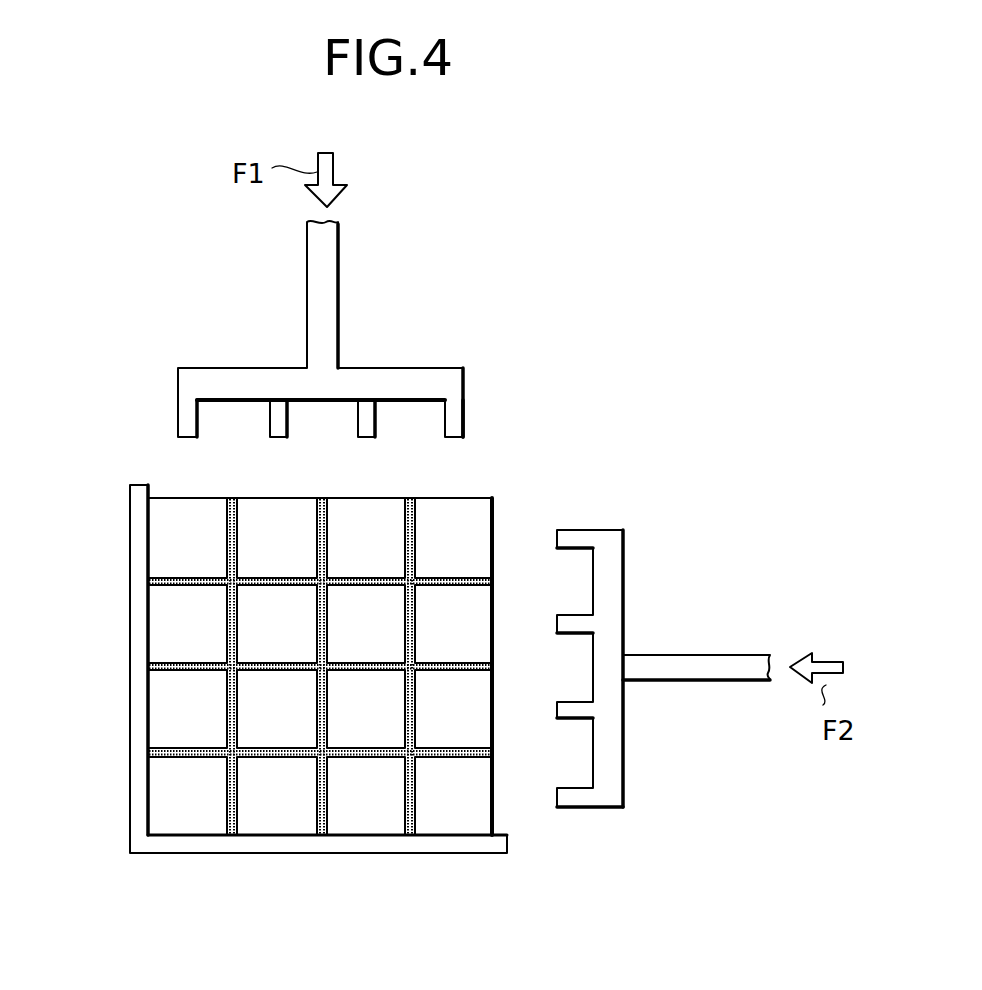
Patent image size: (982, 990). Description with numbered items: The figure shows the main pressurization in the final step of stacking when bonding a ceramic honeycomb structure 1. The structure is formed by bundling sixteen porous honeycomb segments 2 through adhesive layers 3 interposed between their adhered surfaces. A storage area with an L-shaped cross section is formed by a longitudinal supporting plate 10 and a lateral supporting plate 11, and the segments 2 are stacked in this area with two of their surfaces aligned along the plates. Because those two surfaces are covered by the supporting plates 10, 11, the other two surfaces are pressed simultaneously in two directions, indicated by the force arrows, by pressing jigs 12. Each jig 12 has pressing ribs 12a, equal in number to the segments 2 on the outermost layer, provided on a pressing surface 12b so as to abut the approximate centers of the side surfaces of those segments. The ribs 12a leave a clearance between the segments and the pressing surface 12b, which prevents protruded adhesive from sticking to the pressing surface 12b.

The ceramic honeycomb structure 1 is at (520, 508).
The porous honeycomb segment 2 is at (163, 643).
The adhesive layer 3 is at (413, 615).
The longitudinal supporting plate 10 is at (133, 543).
The lateral supporting plate 11 is at (320, 843).
The pressing jig 12 is at (327, 263).
The pressing rib 12a is at (375, 400).
The pressing surface 12b is at (425, 402).